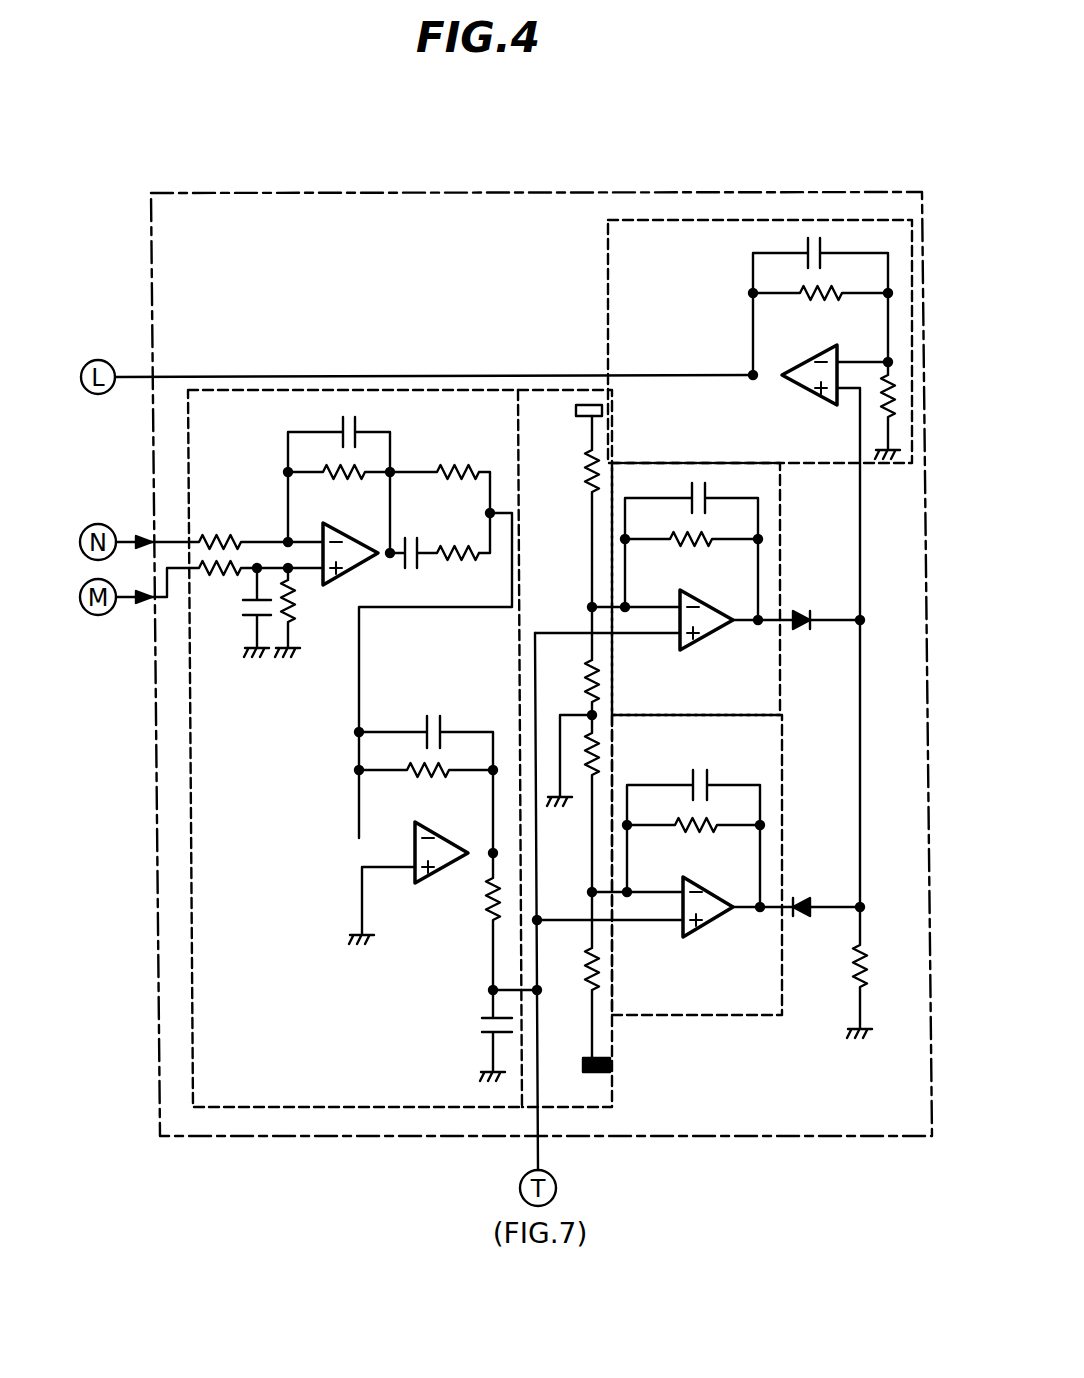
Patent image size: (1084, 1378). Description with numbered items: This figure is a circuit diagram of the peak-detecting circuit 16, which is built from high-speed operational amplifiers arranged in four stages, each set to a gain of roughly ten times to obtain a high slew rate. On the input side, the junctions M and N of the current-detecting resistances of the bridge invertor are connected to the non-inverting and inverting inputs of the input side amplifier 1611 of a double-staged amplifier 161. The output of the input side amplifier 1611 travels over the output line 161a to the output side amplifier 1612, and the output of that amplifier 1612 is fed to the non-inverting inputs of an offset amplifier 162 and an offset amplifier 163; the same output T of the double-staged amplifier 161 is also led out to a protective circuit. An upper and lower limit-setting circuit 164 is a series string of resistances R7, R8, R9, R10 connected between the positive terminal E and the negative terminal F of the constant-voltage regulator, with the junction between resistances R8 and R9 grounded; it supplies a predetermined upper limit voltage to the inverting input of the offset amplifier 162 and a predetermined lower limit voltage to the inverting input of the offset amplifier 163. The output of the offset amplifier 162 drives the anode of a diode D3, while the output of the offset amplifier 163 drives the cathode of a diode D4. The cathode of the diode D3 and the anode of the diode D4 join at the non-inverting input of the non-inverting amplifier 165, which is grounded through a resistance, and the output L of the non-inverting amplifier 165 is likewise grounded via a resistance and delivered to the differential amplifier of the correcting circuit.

The peak-detecting circuit 16 is at (326, 192).
The double-staged amplifier 161 is at (193, 918).
The output line 161a is at (450, 607).
The input side amplifier 1611 is at (335, 586).
The output side amplifier 1612 is at (433, 883).
The offset amplifier 162 is at (782, 671).
The offset amplifier 163 is at (720, 1015).
The upper and lower limit-setting circuit 164 is at (620, 1058).
The non-inverting amplifier 165 is at (607, 310).
The resistance R7 is at (573, 511).
The resistance R8 is at (574, 661).
The resistance R9 is at (600, 763).
The resistance R10 is at (571, 975).
The diode D3 is at (828, 599).
The diode D4 is at (828, 885).